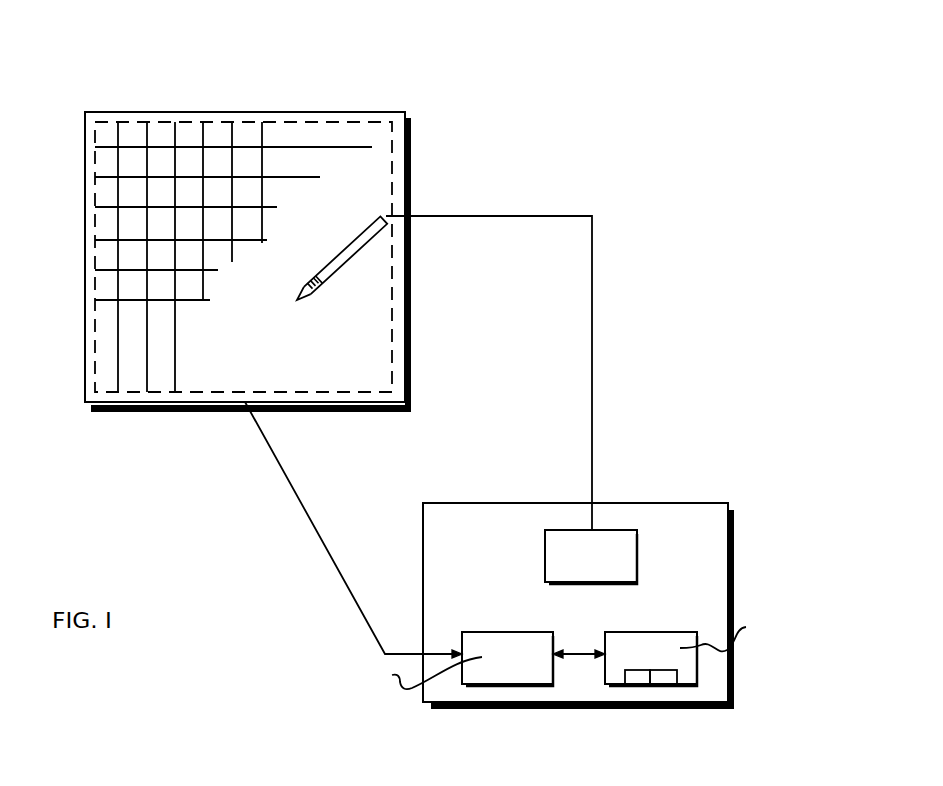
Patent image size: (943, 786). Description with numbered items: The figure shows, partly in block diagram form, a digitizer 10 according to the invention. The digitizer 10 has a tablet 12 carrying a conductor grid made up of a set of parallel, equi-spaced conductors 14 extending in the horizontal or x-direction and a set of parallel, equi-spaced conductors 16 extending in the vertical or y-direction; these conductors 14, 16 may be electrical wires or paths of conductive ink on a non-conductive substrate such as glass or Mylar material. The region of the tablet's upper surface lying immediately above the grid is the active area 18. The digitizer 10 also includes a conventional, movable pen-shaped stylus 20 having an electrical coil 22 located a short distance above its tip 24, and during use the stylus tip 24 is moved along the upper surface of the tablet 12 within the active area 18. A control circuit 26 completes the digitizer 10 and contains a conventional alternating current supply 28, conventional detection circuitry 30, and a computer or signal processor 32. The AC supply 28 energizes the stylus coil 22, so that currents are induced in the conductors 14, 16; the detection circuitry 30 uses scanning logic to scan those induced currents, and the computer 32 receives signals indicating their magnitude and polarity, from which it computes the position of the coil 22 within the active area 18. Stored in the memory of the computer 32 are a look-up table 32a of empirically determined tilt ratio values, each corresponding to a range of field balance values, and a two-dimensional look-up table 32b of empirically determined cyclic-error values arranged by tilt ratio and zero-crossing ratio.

The digitizer 10 is at (545, 82).
The tablet 12 is at (120, 226).
The conductors 14 is at (276, 206).
The conductors 16 is at (205, 138).
The active area 18 is at (143, 402).
The stylus 20 is at (344, 263).
The electrical coil 22 is at (316, 296).
The stylus tip 24 is at (292, 301).
The control circuit 26 is at (482, 578).
The alternating current (AC) supply 28 is at (637, 547).
The detection circuitry 30 is at (525, 632).
The computer or signal processor 32 is at (650, 632).
The look-up table 32a is at (642, 687).
The two-dimensional look-up table 32b is at (660, 687).